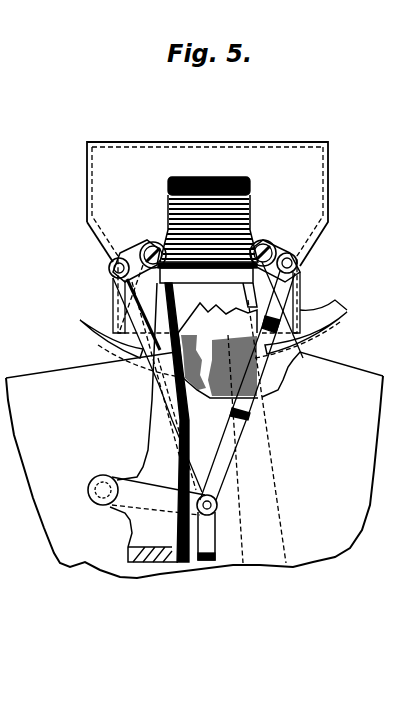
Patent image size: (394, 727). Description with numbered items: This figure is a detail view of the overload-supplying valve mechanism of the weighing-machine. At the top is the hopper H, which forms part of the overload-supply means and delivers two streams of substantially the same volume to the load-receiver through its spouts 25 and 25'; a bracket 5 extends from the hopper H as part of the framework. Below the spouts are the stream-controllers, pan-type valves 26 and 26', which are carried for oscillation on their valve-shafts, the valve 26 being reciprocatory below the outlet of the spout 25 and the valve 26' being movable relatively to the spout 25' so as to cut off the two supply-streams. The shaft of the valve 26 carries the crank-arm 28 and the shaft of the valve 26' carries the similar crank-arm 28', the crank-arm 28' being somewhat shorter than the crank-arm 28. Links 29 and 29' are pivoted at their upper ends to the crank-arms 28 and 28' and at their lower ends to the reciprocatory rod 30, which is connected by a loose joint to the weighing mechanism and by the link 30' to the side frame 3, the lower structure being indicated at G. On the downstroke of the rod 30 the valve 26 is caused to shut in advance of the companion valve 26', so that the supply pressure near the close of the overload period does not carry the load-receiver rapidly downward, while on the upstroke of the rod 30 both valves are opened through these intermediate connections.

The hopper H is at (286, 152).
The bracket 5 is at (231, 178).
The crank-arm 28 is at (137, 250).
The crank-arm 28' is at (275, 247).
The spout 25 is at (115, 286).
The spout 25' is at (298, 286).
The stream-controller valve 26 is at (116, 341).
The stream-controller valve 26' is at (314, 321).
The link 29 is at (151, 378).
The link 29' is at (251, 412).
The end frame 3 is at (160, 432).
The ground / base G is at (194, 465).
The reciprocatory rod 30 is at (232, 527).
The link 30' is at (146, 506).